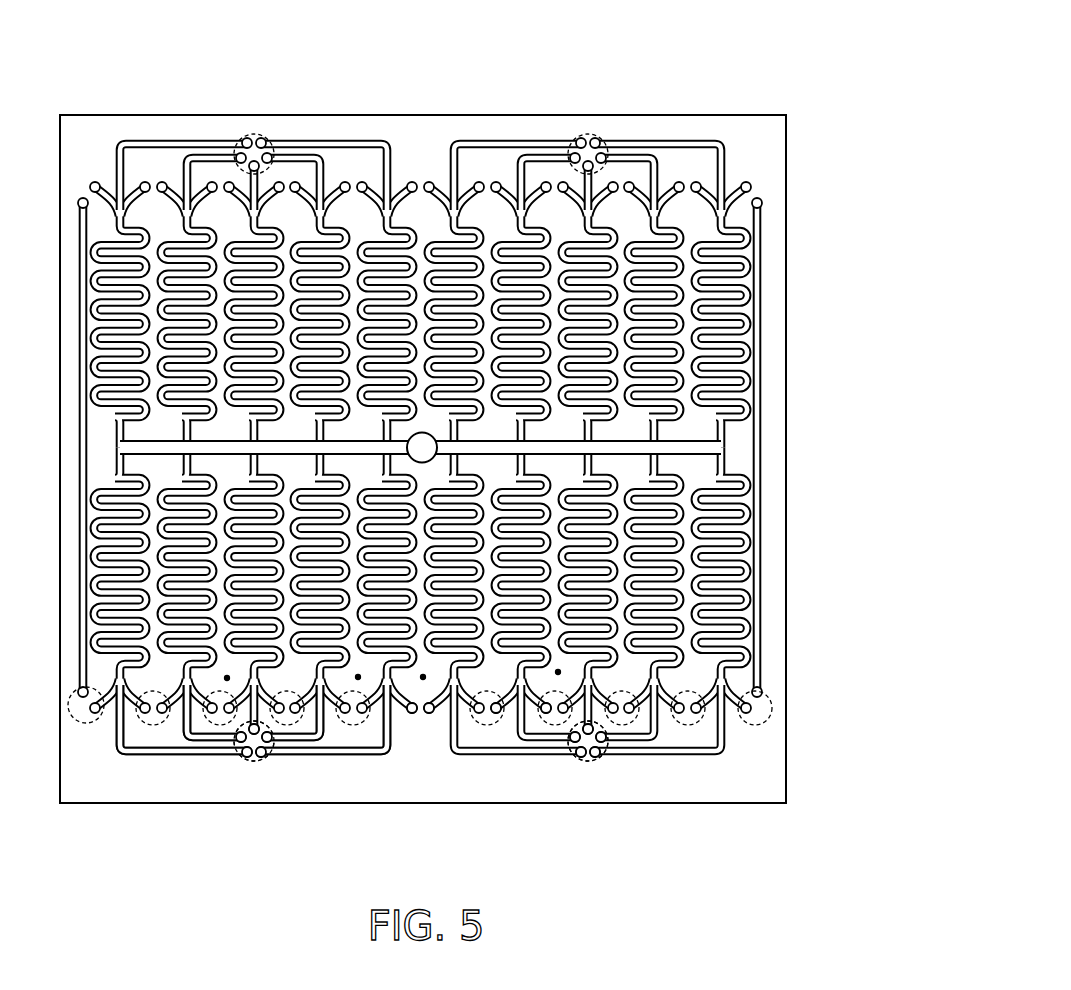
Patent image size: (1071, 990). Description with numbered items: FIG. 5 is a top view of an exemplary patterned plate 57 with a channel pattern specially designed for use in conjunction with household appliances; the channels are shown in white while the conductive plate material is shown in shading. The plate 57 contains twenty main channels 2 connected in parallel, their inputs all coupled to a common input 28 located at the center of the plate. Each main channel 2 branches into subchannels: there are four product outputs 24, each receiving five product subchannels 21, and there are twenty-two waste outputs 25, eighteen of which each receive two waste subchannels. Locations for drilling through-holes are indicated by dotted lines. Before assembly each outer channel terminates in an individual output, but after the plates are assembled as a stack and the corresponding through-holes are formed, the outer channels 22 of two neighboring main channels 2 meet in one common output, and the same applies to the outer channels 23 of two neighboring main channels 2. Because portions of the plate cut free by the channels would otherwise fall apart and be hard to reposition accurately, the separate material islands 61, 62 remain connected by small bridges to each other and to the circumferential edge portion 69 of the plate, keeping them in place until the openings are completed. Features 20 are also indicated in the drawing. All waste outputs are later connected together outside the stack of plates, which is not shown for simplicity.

The patterned plate 57 is at (678, 85).
The main channel 2 is at (186, 289).
The common input 28 is at (425, 447).
The material island 61 is at (358, 677).
The material island 62 is at (558, 672).
The outlet channel 20 is at (733, 673).
The product subchannel 21 is at (222, 731).
The outer channel 22 is at (382, 702).
The outer channel 23 is at (440, 713).
The product output 24 is at (254, 762).
The waste output 25 is at (544, 724).
The circumferential edge portion 69 is at (749, 787).